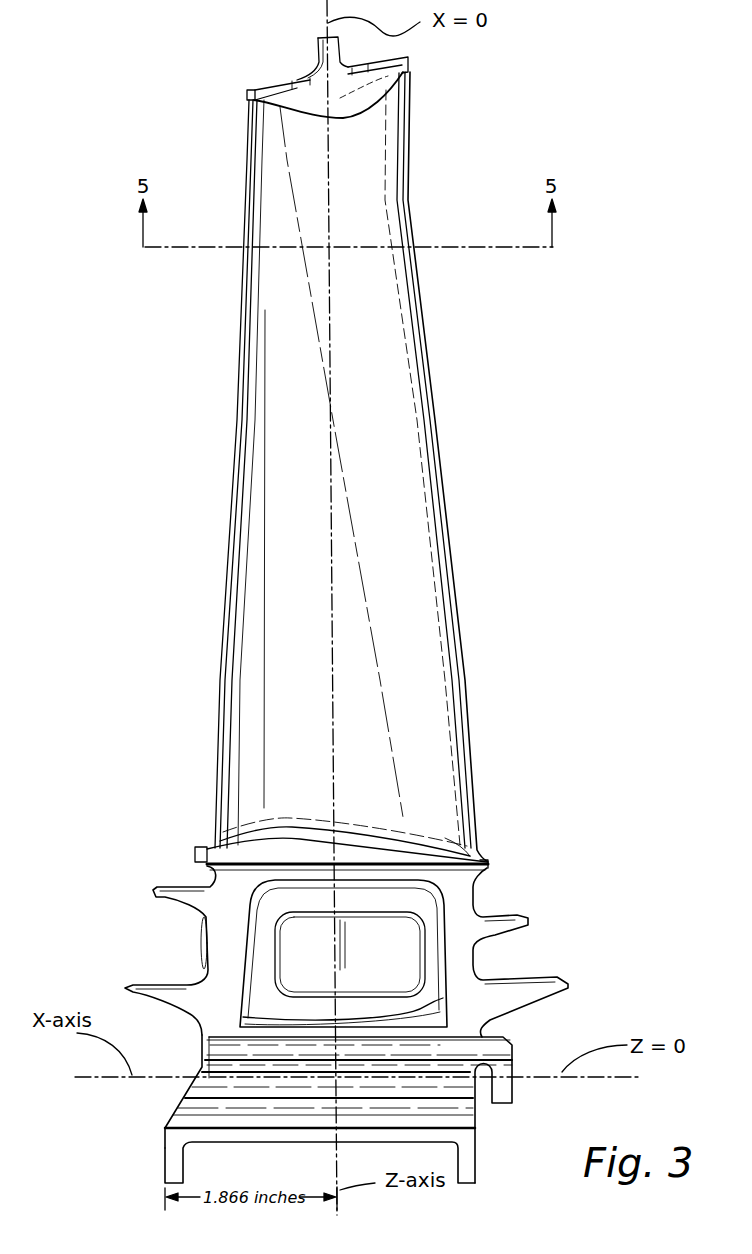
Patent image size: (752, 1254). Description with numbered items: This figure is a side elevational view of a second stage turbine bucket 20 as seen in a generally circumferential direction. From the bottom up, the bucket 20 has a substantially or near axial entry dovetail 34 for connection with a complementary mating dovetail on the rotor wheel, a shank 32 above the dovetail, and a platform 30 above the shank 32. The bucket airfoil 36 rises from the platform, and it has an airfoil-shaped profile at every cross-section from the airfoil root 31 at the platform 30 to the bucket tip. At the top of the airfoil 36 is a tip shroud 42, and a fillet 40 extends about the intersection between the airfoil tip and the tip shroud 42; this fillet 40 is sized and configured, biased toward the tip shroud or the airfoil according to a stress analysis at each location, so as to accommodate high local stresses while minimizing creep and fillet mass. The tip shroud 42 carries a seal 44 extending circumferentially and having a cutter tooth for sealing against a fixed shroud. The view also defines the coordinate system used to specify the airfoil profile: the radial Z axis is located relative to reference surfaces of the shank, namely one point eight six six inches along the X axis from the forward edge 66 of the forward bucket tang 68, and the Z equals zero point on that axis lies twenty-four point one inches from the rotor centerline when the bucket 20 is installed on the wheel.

The bucket 20 is at (233, 470).
The platform 30 is at (227, 843).
The airfoil root 31 is at (320, 827).
The shank 32 is at (233, 910).
The axial entry dovetail 34 is at (440, 1087).
The bucket airfoil 36 is at (348, 352).
The fillet 40 is at (355, 102).
The tip shroud 42 is at (290, 79).
The seal 44 is at (321, 48).
The forward edge 66 is at (163, 1152).
The forward bucket tang 68 is at (172, 1173).